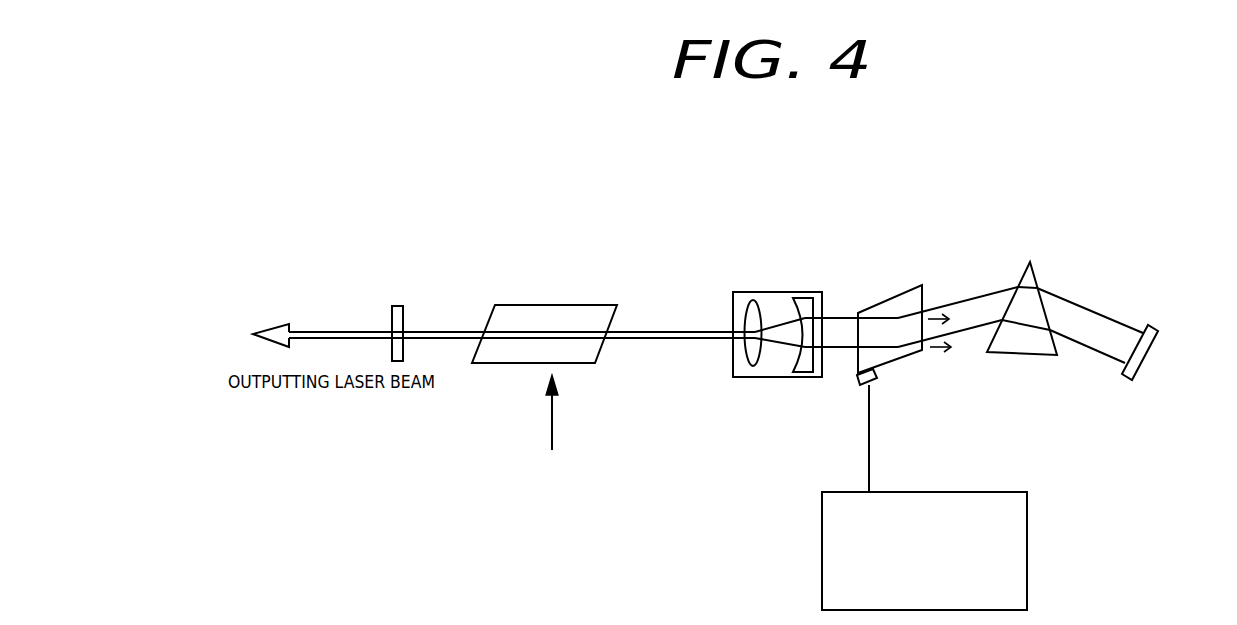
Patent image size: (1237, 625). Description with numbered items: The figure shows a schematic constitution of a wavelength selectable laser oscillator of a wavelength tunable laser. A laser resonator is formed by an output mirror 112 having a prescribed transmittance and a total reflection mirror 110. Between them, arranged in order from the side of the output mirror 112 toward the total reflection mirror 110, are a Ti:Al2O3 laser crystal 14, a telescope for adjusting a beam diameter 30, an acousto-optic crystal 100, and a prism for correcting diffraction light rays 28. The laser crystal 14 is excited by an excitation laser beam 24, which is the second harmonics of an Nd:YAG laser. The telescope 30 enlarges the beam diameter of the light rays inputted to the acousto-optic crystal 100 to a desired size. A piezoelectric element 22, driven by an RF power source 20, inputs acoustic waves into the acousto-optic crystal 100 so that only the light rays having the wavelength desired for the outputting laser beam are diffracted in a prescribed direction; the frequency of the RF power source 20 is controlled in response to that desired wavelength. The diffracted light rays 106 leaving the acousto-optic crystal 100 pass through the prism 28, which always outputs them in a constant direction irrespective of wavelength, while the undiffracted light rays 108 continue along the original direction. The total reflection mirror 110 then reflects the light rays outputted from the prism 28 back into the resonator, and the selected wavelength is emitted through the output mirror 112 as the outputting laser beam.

The output mirror 112 is at (403, 316).
The Ti:Al2O3 laser crystal 14 is at (517, 313).
The excitation laser beam 24 is at (547, 402).
The telescope for adjusting a beam diameter 30 is at (733, 358).
The acousto-optic crystal 100 is at (897, 296).
The diffracted laser beams 106 is at (956, 303).
The zero-order laser beams 108 is at (935, 322).
The prism for correcting diffraction light rays 28 is at (1022, 355).
The total reflection mirror 110 is at (1155, 338).
The piezoelectric element 22 is at (876, 376).
The RF power source 20 is at (1013, 565).